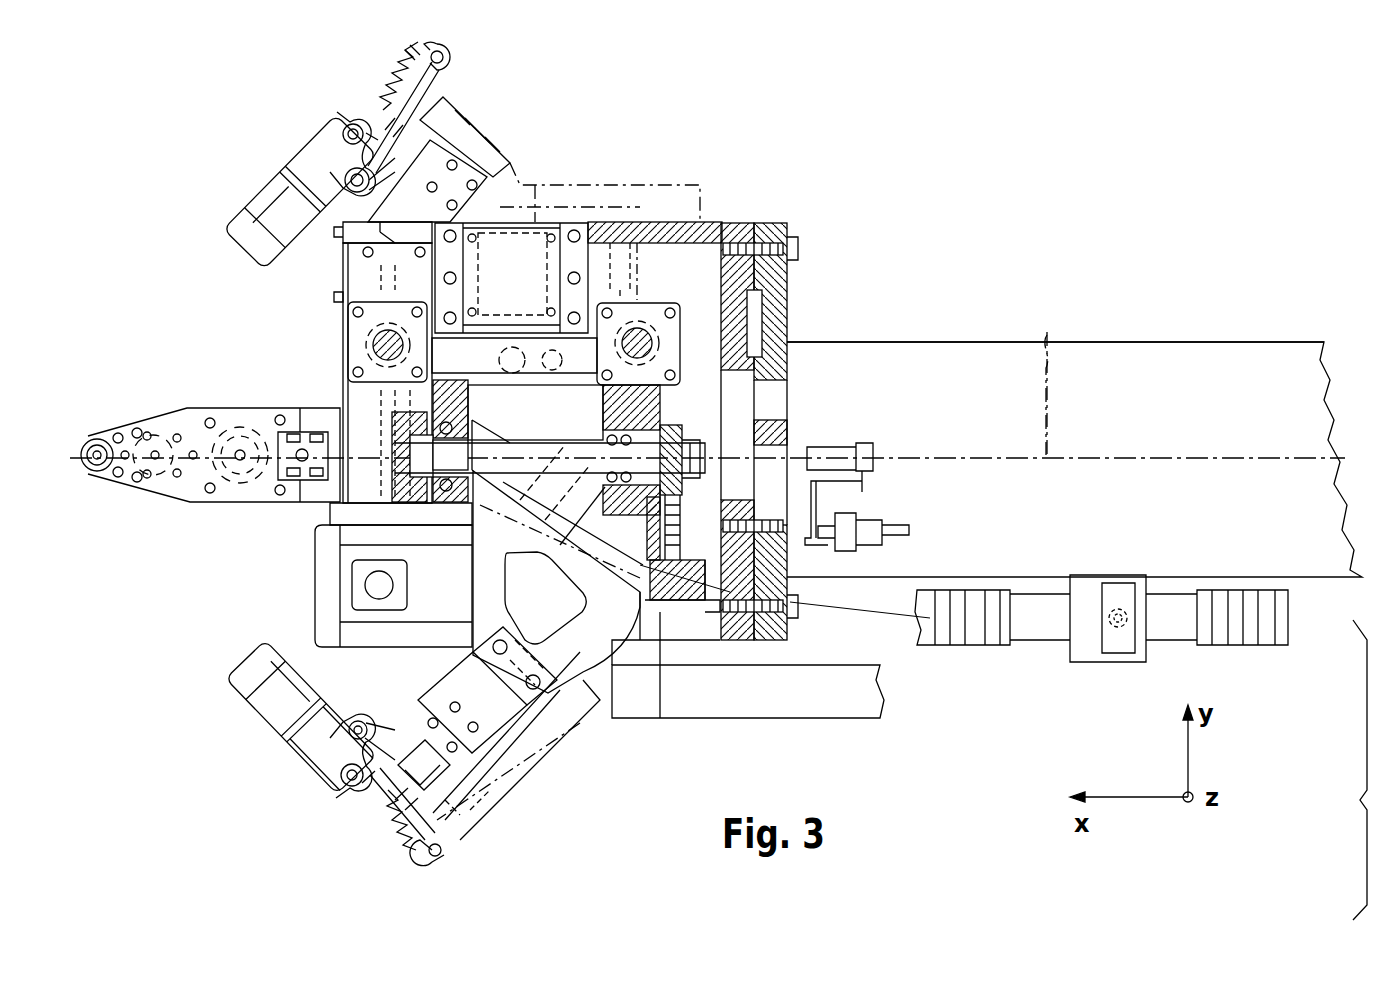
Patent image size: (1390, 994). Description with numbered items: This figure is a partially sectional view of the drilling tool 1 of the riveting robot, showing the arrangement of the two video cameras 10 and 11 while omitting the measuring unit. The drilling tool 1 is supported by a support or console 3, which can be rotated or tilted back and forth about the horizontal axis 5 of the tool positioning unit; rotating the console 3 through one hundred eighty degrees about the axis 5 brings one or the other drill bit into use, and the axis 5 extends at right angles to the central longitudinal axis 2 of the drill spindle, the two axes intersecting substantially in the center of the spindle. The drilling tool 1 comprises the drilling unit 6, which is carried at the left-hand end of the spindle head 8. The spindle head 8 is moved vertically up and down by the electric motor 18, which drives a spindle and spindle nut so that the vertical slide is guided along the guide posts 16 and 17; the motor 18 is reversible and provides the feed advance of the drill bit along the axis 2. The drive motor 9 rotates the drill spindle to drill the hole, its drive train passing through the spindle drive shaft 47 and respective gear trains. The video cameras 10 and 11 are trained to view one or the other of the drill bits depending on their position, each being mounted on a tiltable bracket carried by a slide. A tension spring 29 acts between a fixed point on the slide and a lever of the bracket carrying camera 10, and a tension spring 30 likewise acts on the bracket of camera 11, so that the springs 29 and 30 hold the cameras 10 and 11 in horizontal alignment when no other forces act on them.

The drilling tool 1 is at (1112, 295).
The central longitudinal axis 2 is at (100, 446).
The console 3 is at (876, 370).
The horizontal axis 5 is at (1047, 360).
The drilling unit 6 is at (478, 130).
The spindle head 8 is at (178, 416).
The drive motor 9 is at (330, 590).
The video camera 10 is at (255, 215).
The video camera 11 is at (252, 712).
The guide post 16 is at (356, 350).
The guide post 17 is at (645, 328).
The electric motor 18 is at (525, 240).
The tension spring 29 is at (395, 85).
The tension spring 30 is at (405, 835).
The spindle drive shaft 47 is at (582, 452).